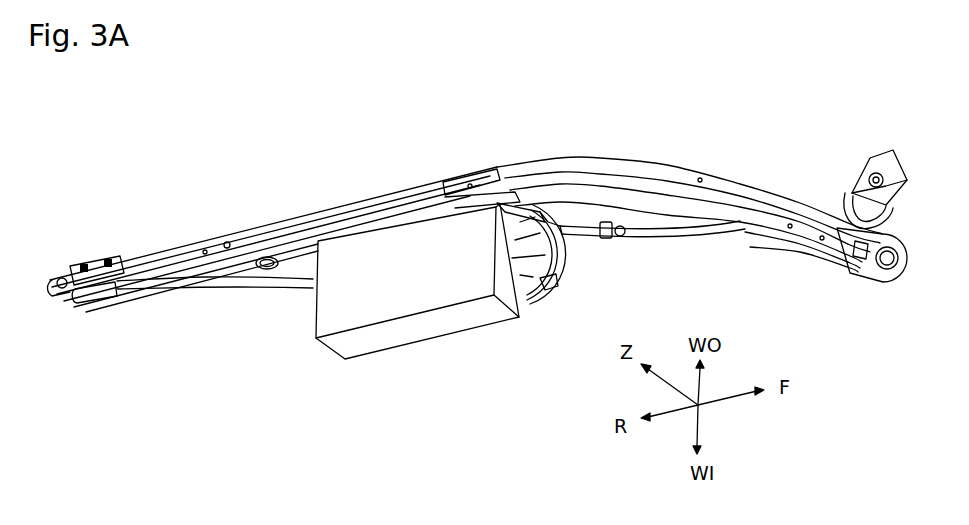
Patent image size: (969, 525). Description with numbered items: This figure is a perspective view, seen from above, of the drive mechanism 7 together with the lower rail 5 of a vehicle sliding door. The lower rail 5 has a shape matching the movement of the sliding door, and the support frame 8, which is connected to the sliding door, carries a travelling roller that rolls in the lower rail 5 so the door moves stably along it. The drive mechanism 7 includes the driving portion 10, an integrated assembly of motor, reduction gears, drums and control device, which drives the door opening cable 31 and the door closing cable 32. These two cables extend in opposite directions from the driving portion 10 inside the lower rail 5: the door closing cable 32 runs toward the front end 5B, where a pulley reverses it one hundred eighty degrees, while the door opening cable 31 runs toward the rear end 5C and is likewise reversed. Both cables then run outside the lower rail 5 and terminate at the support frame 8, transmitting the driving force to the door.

The lower rail 5 is at (591, 158).
The front end 5B is at (887, 285).
The rear end 5C is at (67, 301).
The drive mechanism 7 is at (376, 180).
The support frame 8 is at (883, 156).
The driving portion 10 is at (400, 334).
The door opening cable 31 is at (258, 292).
The door closing cable 32 is at (646, 252).